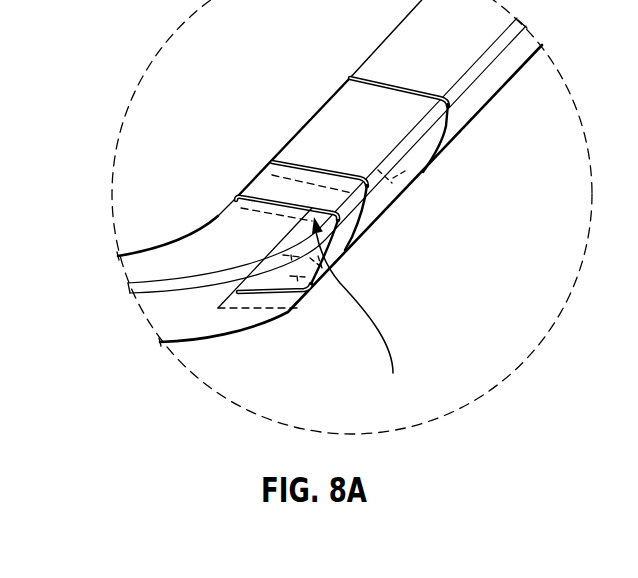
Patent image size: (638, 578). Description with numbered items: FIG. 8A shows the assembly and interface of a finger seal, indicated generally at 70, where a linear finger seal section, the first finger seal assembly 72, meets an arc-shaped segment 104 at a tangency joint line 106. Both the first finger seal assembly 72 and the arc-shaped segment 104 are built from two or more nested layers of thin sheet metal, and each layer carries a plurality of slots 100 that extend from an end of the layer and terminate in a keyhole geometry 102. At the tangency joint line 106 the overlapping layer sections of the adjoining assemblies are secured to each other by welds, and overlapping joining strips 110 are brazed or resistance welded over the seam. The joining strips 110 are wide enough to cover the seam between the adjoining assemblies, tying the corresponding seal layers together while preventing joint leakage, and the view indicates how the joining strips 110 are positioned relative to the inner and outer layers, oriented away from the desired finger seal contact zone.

The strap assembly 70 is at (138, 46).
The first finger seal assembly 72 is at (326, 122).
The slots 100 is at (365, 77).
The keyhole geometry 102 is at (398, 190).
The arc-shaped segment 104 is at (210, 254).
The tangency joint line 106 is at (337, 255).
The joining strips 110 is at (364, 312).